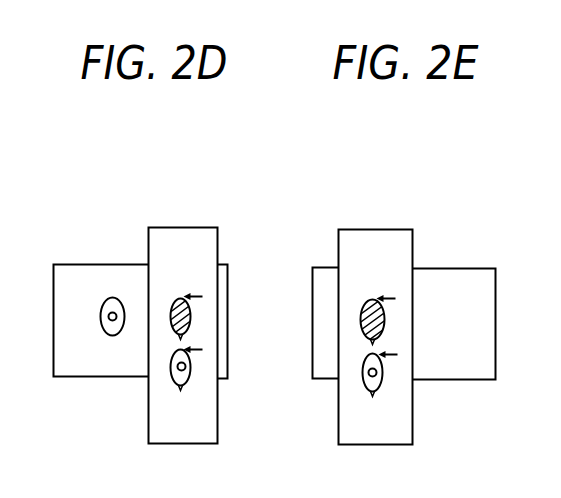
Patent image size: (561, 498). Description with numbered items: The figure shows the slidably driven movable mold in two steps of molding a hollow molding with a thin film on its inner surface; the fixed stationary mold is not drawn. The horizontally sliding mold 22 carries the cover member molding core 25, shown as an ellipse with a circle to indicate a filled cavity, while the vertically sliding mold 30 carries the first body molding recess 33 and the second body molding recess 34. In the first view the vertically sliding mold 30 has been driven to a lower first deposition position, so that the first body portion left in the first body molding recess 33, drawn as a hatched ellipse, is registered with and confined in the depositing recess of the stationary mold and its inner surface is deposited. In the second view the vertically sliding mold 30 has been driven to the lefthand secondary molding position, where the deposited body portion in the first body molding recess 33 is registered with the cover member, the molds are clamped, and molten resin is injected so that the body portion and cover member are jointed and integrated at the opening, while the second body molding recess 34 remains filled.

In FIG. 2D, the horizontally sliding mold 22 is at (90, 256).
In FIG. 2D, the cover member molding core 25 is at (104, 328).
In FIG. 2D, the vertically sliding mold 30 is at (148, 220).
In FIG. 2E, the vertically sliding mold 30 is at (380, 222).
In FIG. 2D, the first body molding recess 33 is at (170, 294).
In FIG. 2E, the first body molding recess 33 is at (376, 316).
In FIG. 2D, the second body molding recess 34 is at (182, 366).
In FIG. 2E, the second body molding recess 34 is at (374, 374).